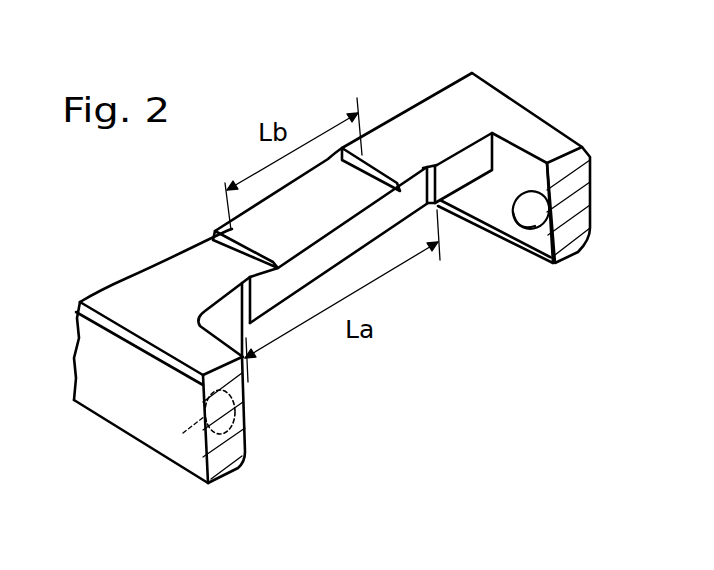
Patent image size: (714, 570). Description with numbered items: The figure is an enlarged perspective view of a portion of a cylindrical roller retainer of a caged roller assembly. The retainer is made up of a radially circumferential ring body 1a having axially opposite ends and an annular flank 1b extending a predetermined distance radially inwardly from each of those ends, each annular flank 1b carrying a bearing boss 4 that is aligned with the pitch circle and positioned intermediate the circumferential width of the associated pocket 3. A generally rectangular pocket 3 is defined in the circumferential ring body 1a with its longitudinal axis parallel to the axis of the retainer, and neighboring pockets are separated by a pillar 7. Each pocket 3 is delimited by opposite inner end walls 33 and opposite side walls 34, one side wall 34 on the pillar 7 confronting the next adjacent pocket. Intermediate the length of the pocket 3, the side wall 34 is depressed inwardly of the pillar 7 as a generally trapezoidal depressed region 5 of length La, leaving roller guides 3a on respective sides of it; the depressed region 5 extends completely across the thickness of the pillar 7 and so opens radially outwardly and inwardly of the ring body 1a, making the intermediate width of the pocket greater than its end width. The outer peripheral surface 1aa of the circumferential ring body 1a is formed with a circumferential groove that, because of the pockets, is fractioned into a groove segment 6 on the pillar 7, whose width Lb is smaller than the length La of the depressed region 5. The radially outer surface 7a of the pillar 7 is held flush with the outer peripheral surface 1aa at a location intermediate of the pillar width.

The radially circumferential ring body 1a is at (153, 323).
The outer peripheral surface 1aa is at (206, 357).
The annular flank 1b is at (192, 433).
The pocket 3 is at (467, 175).
The roller guide 3a is at (215, 313).
The bearing boss 4 is at (250, 408).
The depressed region 5 is at (400, 208).
The groove segment 6 is at (367, 188).
The pillar 7 is at (208, 262).
The radially outer surface 7a is at (423, 121).
The inner end wall 33 is at (532, 178).
The side wall 34 is at (475, 153).